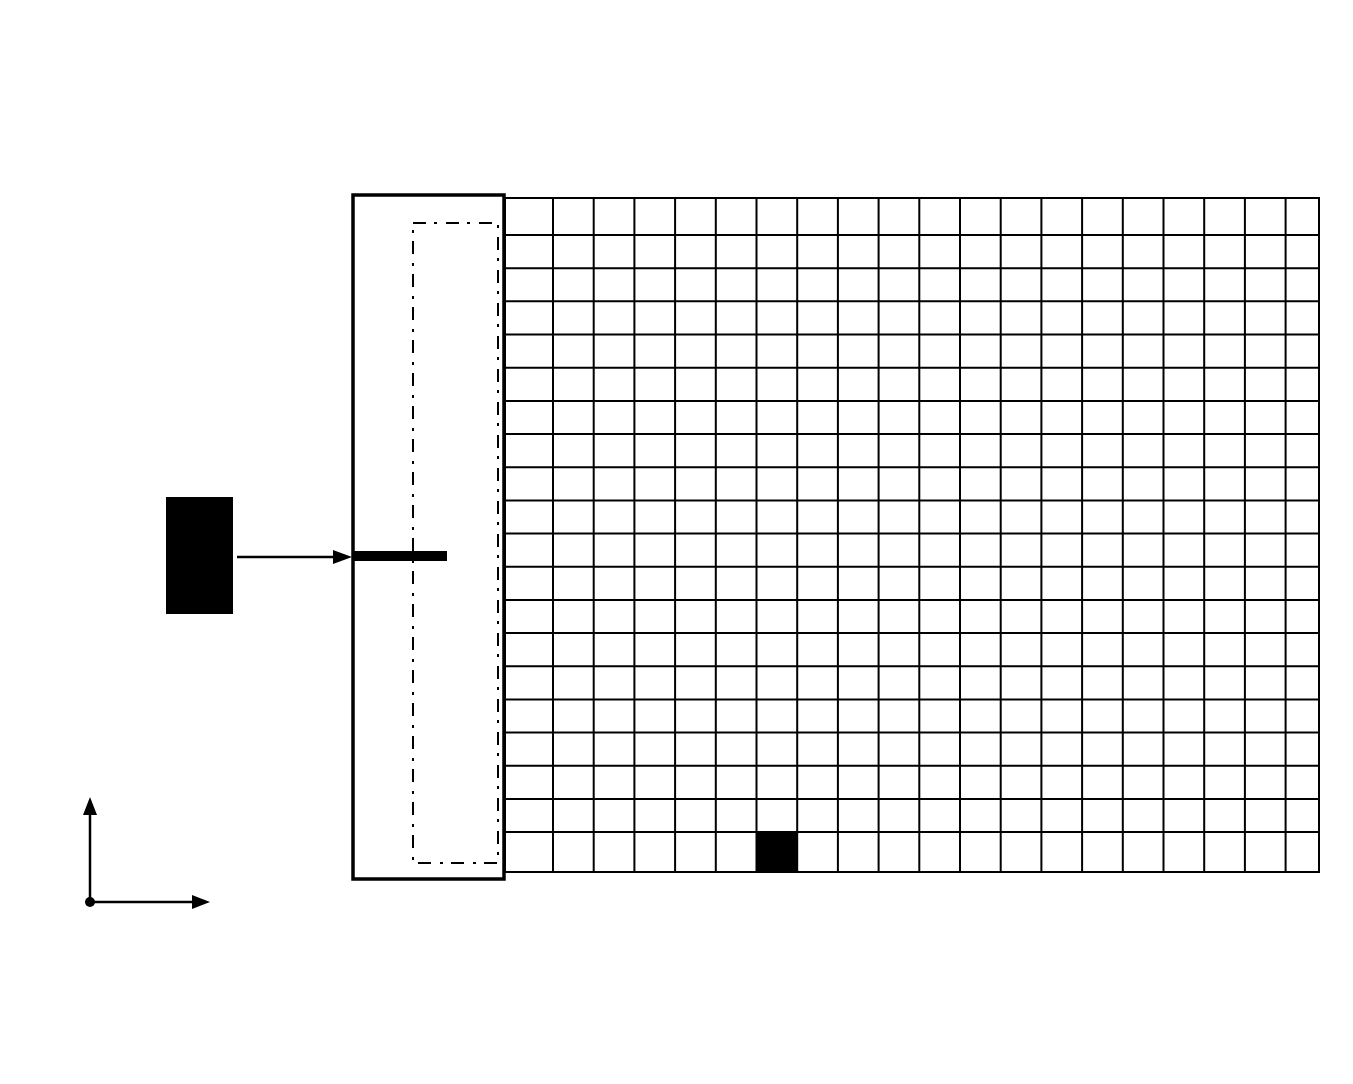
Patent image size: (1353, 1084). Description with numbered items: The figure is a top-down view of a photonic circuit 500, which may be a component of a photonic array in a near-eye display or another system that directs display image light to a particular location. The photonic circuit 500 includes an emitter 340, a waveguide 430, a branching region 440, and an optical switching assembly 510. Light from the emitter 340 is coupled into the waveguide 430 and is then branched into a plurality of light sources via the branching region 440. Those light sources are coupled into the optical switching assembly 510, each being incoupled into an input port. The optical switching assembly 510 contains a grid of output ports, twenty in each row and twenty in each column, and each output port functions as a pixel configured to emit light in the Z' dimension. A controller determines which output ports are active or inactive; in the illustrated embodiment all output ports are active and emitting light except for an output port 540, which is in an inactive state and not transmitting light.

The photonic circuit 500 is at (161, 90).
The optical switching assembly 510 is at (1309, 185).
The emitter 340 is at (166, 541).
The waveguide 430 is at (390, 561).
The branching region 440 is at (417, 771).
The output port 540 is at (795, 873).